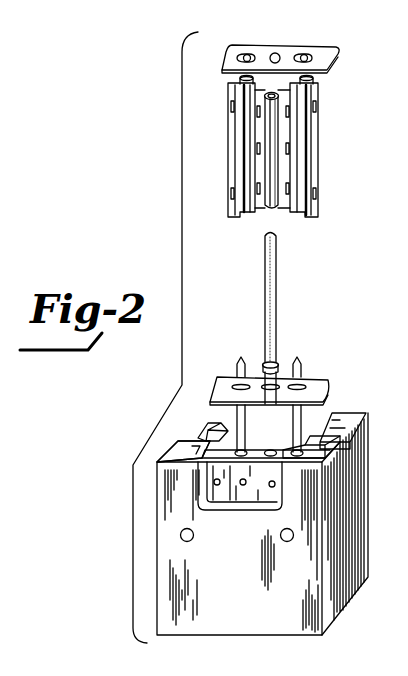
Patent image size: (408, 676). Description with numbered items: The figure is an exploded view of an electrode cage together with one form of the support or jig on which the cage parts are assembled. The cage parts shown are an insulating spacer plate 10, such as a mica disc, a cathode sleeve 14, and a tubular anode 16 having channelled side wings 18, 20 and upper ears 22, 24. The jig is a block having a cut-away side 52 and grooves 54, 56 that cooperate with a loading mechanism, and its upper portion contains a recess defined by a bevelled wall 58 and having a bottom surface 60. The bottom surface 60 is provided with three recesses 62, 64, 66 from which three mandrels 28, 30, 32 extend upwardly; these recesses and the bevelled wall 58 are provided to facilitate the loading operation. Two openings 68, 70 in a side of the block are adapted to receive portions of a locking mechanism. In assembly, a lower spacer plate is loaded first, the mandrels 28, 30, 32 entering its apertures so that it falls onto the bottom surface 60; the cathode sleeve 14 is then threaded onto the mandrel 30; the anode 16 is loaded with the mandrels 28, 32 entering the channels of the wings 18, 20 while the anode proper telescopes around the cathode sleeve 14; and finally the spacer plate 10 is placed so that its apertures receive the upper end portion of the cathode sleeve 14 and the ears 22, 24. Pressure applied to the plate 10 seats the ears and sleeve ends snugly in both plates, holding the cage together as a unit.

The spacer plate 10 is at (325, 52).
The cathode sleeve 14 is at (273, 290).
The tubular anode 16 is at (272, 209).
The channelled side wing 18 is at (232, 165).
The channelled side wing 20 is at (312, 148).
The upper ear 22 is at (241, 82).
The upper ear 24 is at (272, 92).
The mandrel 28 is at (237, 366).
The mandrel 30 is at (277, 368).
The mandrel 32 is at (303, 372).
The cut-away side 52 is at (245, 502).
The groove 54 is at (200, 445).
The groove 56 is at (342, 607).
The bevelled wall 58 is at (212, 427).
The bottom surface 60 is at (305, 444).
The recess 62 is at (235, 453).
The recess 64 is at (267, 460).
The recess 66 is at (290, 450).
The opening 68 is at (188, 542).
The opening 70 is at (287, 542).